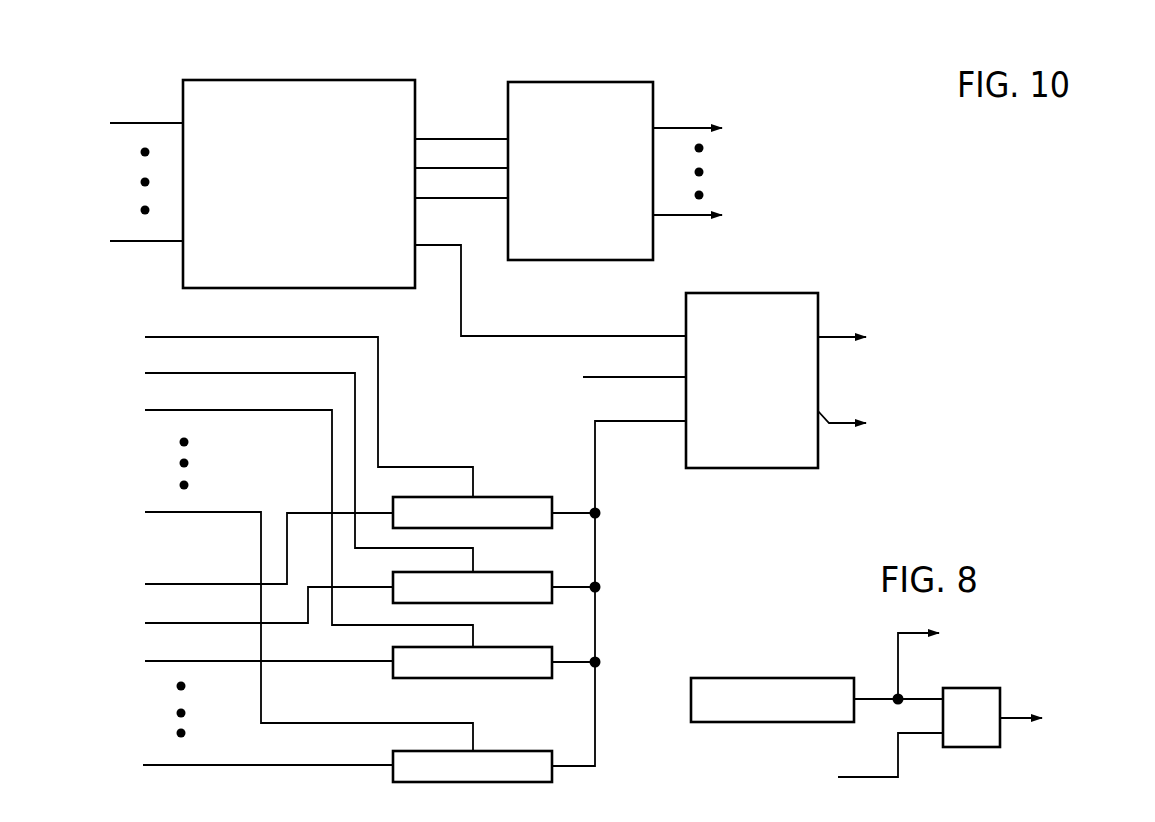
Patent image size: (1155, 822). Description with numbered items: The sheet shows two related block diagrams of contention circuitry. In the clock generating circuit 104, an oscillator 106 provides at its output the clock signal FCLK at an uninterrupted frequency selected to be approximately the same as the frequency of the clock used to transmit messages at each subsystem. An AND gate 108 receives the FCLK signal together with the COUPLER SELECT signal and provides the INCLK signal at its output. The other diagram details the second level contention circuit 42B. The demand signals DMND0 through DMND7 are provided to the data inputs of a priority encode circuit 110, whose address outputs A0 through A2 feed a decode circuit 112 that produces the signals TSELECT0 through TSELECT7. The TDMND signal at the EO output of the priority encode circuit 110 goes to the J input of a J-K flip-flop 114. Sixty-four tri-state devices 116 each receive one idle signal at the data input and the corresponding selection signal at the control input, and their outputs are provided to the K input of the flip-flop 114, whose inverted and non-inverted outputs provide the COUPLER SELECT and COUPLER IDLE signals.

In FIG. 10, the second level contention circuit 42B is at (131, 88).
In FIG. 10, the priority encode circuit 110 is at (284, 80).
In FIG. 10, the decode circuit 112 is at (581, 81).
In FIG. 10, the J-K flip-flop 114 is at (705, 470).
In FIG. 10, the tri-state devices 116 is at (512, 497).
In FIG. 8, the clock generating circuit 104 is at (789, 636).
In FIG. 8, the oscillator 106 is at (755, 678).
In FIG. 8, the AND gate 108 is at (970, 748).